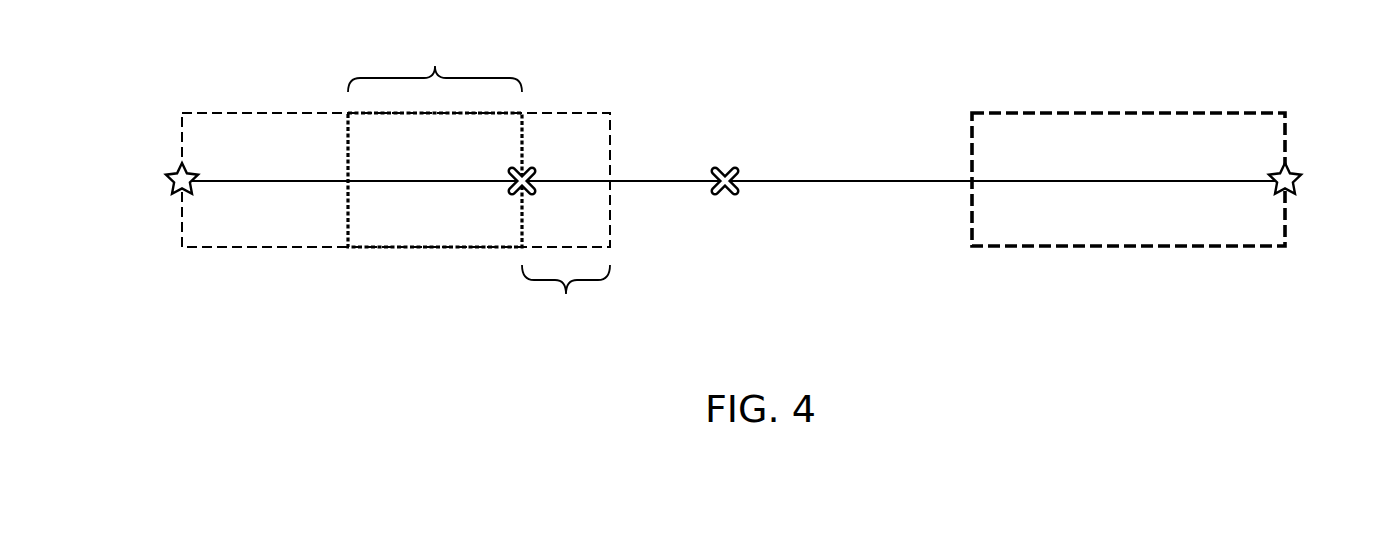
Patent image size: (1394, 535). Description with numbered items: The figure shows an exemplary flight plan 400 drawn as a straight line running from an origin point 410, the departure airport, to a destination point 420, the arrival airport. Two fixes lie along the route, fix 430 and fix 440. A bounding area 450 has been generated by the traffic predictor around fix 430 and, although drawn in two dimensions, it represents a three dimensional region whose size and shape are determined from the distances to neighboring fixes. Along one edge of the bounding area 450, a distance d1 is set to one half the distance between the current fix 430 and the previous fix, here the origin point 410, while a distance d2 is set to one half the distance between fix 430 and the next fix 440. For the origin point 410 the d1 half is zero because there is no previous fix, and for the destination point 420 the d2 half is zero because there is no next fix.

The flight plan 400 is at (822, 181).
The origin point 410 is at (172, 187).
The destination point 420 is at (1298, 190).
The fix 430 is at (533, 170).
The fix 440 is at (736, 171).
The bounding area 450 is at (392, 248).
The distance d1 is at (435, 62).
The distance d2 is at (566, 297).